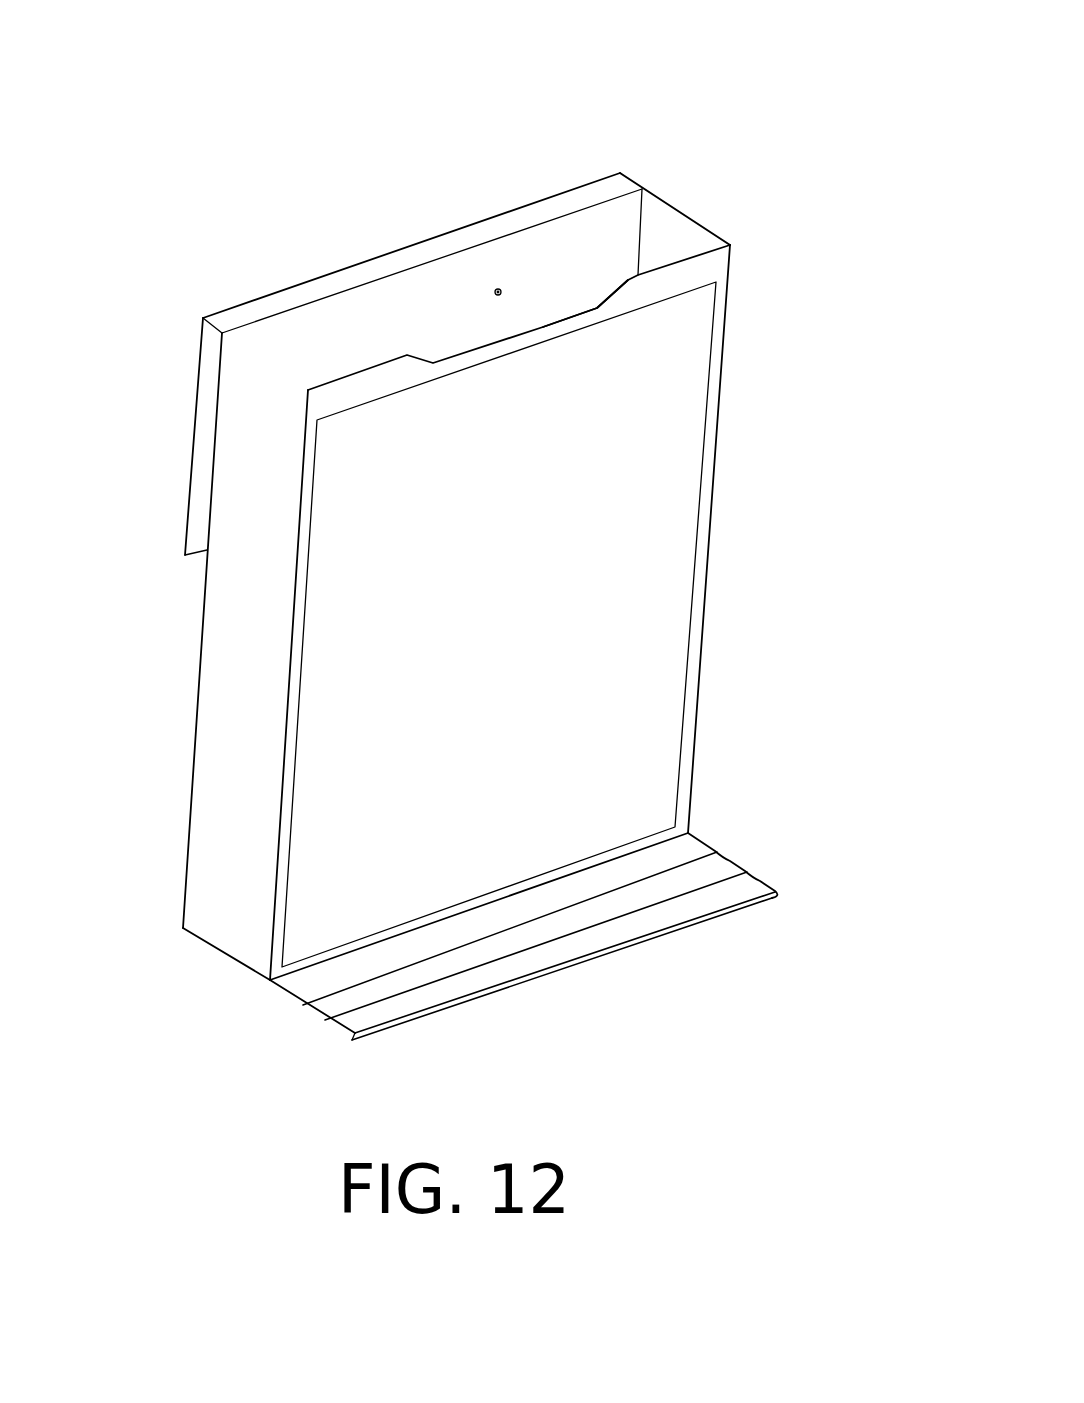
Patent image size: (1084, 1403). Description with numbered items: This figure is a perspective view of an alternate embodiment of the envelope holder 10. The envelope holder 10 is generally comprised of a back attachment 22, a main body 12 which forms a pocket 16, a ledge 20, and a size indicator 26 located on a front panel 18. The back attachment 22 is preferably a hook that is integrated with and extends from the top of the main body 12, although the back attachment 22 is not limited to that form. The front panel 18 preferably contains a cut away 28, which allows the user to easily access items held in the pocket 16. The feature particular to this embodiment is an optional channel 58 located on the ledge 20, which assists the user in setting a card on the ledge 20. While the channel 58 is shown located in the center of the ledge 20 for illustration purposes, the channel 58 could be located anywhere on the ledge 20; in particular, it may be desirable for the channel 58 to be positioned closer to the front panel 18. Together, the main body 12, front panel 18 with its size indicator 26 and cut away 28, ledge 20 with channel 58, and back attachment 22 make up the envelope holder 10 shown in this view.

The envelope holder 10 is at (445, 533).
The main body 12 is at (367, 576).
The pocket 16 is at (616, 185).
The front panel 18 is at (576, 612).
The ledge 20 is at (573, 935).
The back attachment 22 is at (408, 306).
The size indicator 26 is at (580, 624).
The cut away 28 is at (692, 222).
The channel 58 is at (590, 901).